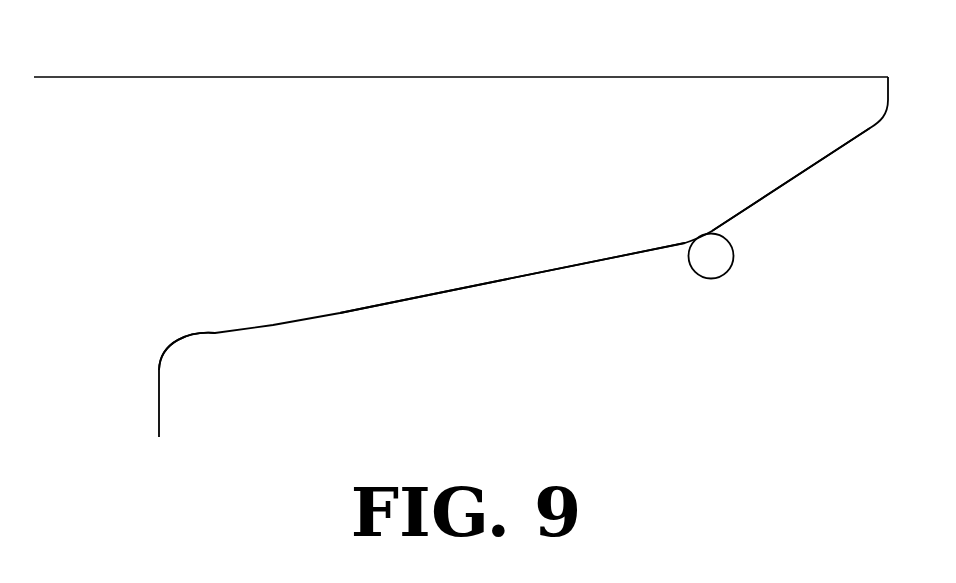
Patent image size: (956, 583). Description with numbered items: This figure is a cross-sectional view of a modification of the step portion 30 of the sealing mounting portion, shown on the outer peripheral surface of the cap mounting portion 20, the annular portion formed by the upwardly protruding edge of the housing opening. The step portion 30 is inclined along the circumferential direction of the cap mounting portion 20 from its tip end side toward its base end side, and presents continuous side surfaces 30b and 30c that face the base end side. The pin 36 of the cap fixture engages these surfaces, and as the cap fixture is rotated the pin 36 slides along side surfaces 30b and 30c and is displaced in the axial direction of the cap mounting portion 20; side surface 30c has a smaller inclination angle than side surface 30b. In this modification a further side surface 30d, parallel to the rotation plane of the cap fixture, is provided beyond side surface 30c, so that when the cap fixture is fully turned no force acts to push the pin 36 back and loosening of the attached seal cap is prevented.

The cap mounting portion 20 is at (416, 100).
The step portion 30 is at (649, 346).
The side surface 30b is at (758, 200).
The side surface 30c is at (512, 282).
The side surface 30d is at (202, 335).
The pin 36 is at (726, 276).